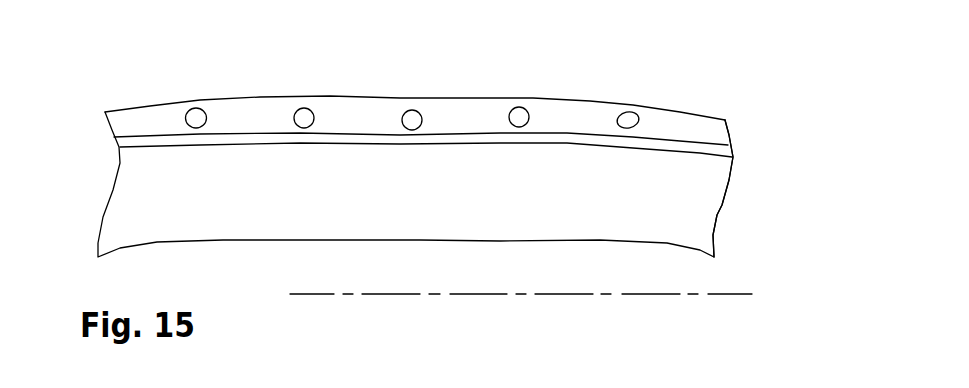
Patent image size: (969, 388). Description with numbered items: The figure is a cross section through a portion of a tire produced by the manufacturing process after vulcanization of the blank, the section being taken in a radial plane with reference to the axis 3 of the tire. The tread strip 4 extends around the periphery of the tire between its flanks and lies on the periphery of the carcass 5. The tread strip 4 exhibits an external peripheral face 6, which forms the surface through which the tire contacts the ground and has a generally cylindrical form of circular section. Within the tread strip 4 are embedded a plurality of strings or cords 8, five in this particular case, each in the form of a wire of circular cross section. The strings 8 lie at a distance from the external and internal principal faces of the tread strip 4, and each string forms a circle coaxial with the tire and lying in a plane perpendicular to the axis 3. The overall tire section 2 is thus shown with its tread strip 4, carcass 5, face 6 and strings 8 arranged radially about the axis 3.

The strip 2 is at (793, 187).
The axis 3 is at (717, 294).
The tread strip 4 is at (665, 118).
The carcass 5 is at (717, 215).
The external peripheral face 6 is at (369, 93).
The strings or cords 8 is at (194, 108).